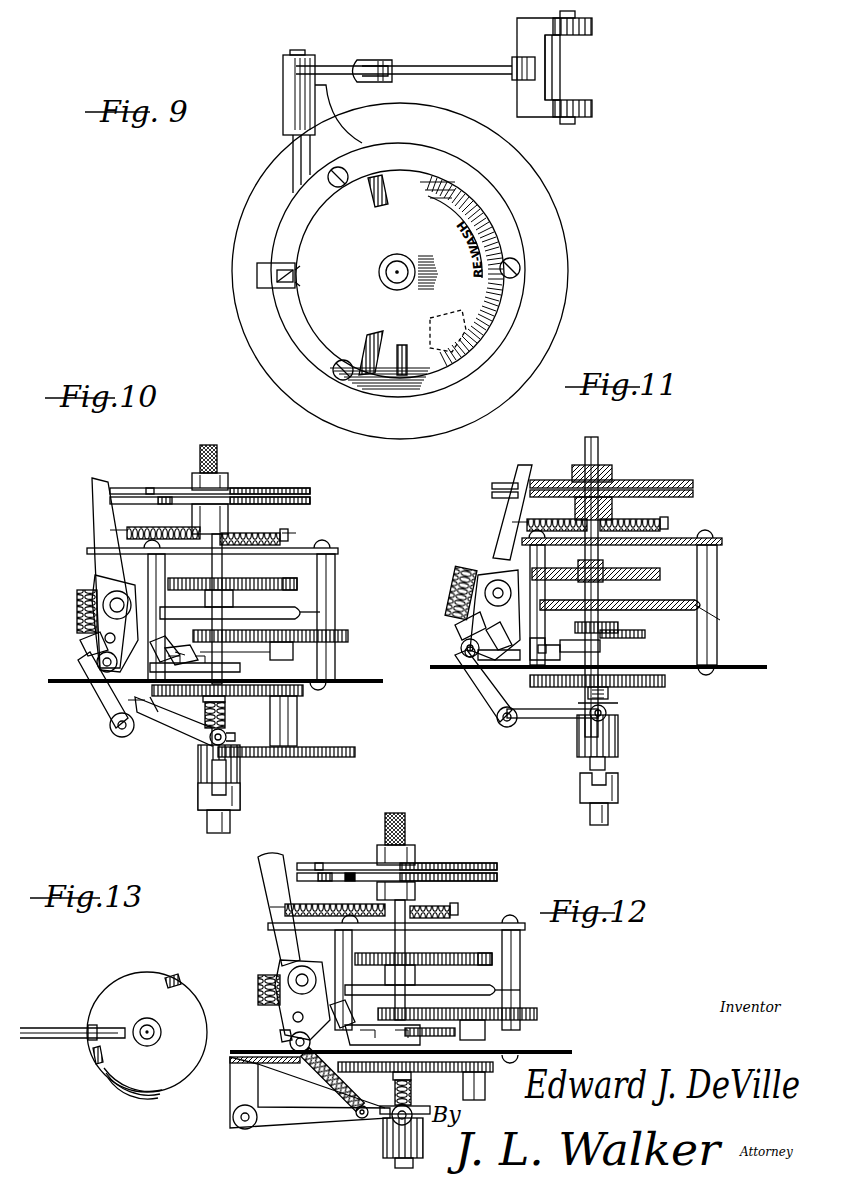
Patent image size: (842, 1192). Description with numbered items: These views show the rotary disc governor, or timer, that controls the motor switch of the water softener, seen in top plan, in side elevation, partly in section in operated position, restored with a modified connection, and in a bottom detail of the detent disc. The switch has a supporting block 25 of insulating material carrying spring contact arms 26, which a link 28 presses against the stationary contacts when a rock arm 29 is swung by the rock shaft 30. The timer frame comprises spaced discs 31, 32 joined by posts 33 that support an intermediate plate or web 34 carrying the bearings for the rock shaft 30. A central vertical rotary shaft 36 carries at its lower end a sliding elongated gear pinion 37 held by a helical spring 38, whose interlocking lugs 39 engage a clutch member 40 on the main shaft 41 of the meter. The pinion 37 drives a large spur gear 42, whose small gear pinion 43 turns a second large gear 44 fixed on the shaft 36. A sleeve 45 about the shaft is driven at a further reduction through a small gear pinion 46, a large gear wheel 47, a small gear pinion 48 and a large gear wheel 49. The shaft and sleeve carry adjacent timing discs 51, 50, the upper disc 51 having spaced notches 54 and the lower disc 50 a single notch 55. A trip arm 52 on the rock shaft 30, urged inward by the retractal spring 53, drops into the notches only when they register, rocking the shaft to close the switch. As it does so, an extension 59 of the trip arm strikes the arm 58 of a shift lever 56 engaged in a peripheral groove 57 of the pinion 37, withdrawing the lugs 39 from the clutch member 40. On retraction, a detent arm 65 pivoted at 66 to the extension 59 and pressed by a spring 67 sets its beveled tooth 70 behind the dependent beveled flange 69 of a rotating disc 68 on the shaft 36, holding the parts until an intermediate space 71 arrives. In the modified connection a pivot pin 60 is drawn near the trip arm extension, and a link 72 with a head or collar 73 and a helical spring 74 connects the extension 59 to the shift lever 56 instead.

In FIG. 9, the supporting block 25 is at (572, 80).
In FIG. 9, the spring contact arms 26 is at (588, 22).
In FIG. 9, the link 28 is at (455, 68).
In FIG. 9, the rock arm 29 is at (353, 64).
In FIG. 9, the rock shaft 30 is at (300, 56).
In FIG. 10, the rock shaft 30 is at (117, 598).
In FIG. 11, the rock shaft 30 is at (498, 588).
In FIG. 9, the lower disc 31 is at (404, 424).
In FIG. 10, the lower disc 31 is at (360, 680).
In FIG. 11, the lower disc 31 is at (686, 680).
In FIG. 12, the lower disc 31 is at (538, 1052).
In FIG. 9, the upper disc 32 is at (452, 382).
In FIG. 10, the upper disc 32 is at (300, 548).
In FIG. 11, the upper disc 32 is at (676, 538).
In FIG. 12, the upper disc 32 is at (460, 930).
In FIG. 10, the posts 33 is at (336, 578).
In FIG. 11, the posts 33 is at (717, 578).
In FIG. 12, the posts 33 is at (520, 956).
In FIG. 10, the intermediate plate or web 34 is at (305, 613).
In FIG. 11, the intermediate plate or web 34 is at (700, 612).
In FIG. 12, the intermediate plate or web 34 is at (500, 990).
In FIG. 10, the rotary shaft 36 is at (226, 710).
In FIG. 12, the rotary shaft 36 is at (412, 1088).
In FIG. 13, the rotary shaft 36 is at (162, 1032).
In FIG. 10, the sliding elongated gear pinion 37 is at (198, 796).
In FIG. 11, the sliding elongated gear pinion 37 is at (620, 733).
In FIG. 12, the sliding elongated gear pinion 37 is at (384, 1138).
In FIG. 10, the helical spring 38 is at (205, 702).
In FIG. 11, the helical spring 38 is at (610, 698).
In FIG. 12, the helical spring 38 is at (394, 1080).
In FIG. 10, the interlocking lugs 39 is at (228, 784).
In FIG. 11, the interlocking lugs 39 is at (608, 764).
In FIG. 12, the interlocking lugs 39 is at (398, 1166).
In FIG. 10, the clutch member 40 is at (198, 812).
In FIG. 11, the clutch member 40 is at (580, 796).
In FIG. 10, the main shaft 41 is at (231, 826).
In FIG. 11, the main shaft 41 is at (610, 818).
In FIG. 10, the large spur gear 42 is at (300, 760).
In FIG. 10, the small gear pinion 43 is at (312, 692).
In FIG. 10, the second large gear 44 is at (166, 700).
In FIG. 11, the second large gear 44 is at (576, 688).
In FIG. 12, the second large gear 44 is at (330, 1075).
In FIG. 10, the sleeve 45 is at (225, 570).
In FIG. 11, the sleeve 45 is at (612, 556).
In FIG. 12, the sleeve 45 is at (400, 960).
In FIG. 10, the small gear pinion 46 is at (181, 644).
In FIG. 11, the small gear pinion 46 is at (620, 626).
In FIG. 12, the small gear pinion 46 is at (382, 1021).
In FIG. 10, the large gear wheel 47 is at (340, 632).
In FIG. 12, the large gear wheel 47 is at (537, 1010).
In FIG. 10, the small gear pinion 48 is at (291, 572).
In FIG. 12, the small gear pinion 48 is at (474, 948).
In FIG. 10, the large gear wheel 49 is at (197, 578).
In FIG. 11, the large gear wheel 49 is at (660, 574).
In FIG. 12, the large gear wheel 49 is at (432, 954).
In FIG. 10, the lower disc 50 is at (262, 506).
In FIG. 11, the lower disc 50 is at (696, 492).
In FIG. 12, the lower disc 50 is at (498, 878).
In FIG. 9, the upper disc 51 is at (400, 279).
In FIG. 10, the upper disc 51 is at (272, 490).
In FIG. 11, the upper disc 51 is at (668, 482).
In FIG. 12, the upper disc 51 is at (456, 862).
In FIG. 9, the trip arm 52 is at (296, 275).
In FIG. 10, the trip arm 52 is at (97, 522).
In FIG. 11, the trip arm 52 is at (505, 514).
In FIG. 12, the trip arm 52 is at (272, 903).
In FIG. 10, the retractal spring 53 is at (203, 529).
In FIG. 11, the retractal spring 53 is at (590, 516).
In FIG. 12, the retractal spring 53 is at (364, 900).
In FIG. 9, the notches or recesses 54 is at (378, 205).
In FIG. 10, the notches or recesses 54 is at (150, 488).
In FIG. 11, the notches or recesses 54 is at (500, 482).
In FIG. 12, the notches or recesses 54 is at (320, 862).
In FIG. 9, the notch or recess 55 is at (446, 331).
In FIG. 10, the notch or recess 55 is at (166, 496).
In FIG. 11, the notch or recess 55 is at (492, 495).
In FIG. 12, the notch or recess 55 is at (346, 872).
In FIG. 10, the shift lever 56 is at (178, 740).
In FIG. 11, the shift lever 56 is at (556, 730).
In FIG. 12, the shift lever 56 is at (312, 1118).
In FIG. 10, the peripheral groove 57 is at (228, 736).
In FIG. 11, the peripheral groove 57 is at (610, 714).
In FIG. 12, the peripheral groove 57 is at (415, 1113).
In FIG. 10, the arm 58 is at (100, 700).
In FIG. 11, the arm 58 is at (484, 700).
In FIG. 10, the extension 59 is at (104, 640).
In FIG. 11, the extension 59 is at (460, 648).
In FIG. 12, the pivot pin 60 is at (292, 1020).
In FIG. 10, the detent arm 65 is at (152, 645).
In FIG. 11, the detent arm 65 is at (512, 646).
In FIG. 12, the detent arm 65 is at (345, 1022).
In FIG. 13, the detent arm 65 is at (76, 1040).
In FIG. 10, the pivot 66 is at (82, 640).
In FIG. 11, the pivot 66 is at (462, 618).
In FIG. 10, the spring 67 is at (78, 608).
In FIG. 11, the spring 67 is at (452, 584).
In FIG. 12, the spring 67 is at (258, 1000).
In FIG. 10, the rotating disc 68 is at (230, 656).
In FIG. 11, the rotating disc 68 is at (610, 648).
In FIG. 12, the rotating disc 68 is at (410, 1034).
In FIG. 13, the rotating disc 68 is at (147, 1032).
In FIG. 10, the dependent beveled flange 69 is at (190, 666).
In FIG. 11, the dependent beveled flange 69 is at (556, 653).
In FIG. 13, the dependent beveled flange 69 is at (118, 1090).
In FIG. 10, the beveled tooth 70 is at (150, 680).
In FIG. 11, the beveled tooth 70 is at (510, 660).
In FIG. 12, the beveled tooth 70 is at (352, 1010).
In FIG. 13, the intermediate spaces 71 is at (104, 1050).
In FIG. 12, the link 72 is at (312, 1068).
In FIG. 12, the head or collar 73 is at (290, 1040).
In FIG. 12, the helical spring 74 is at (356, 1108).